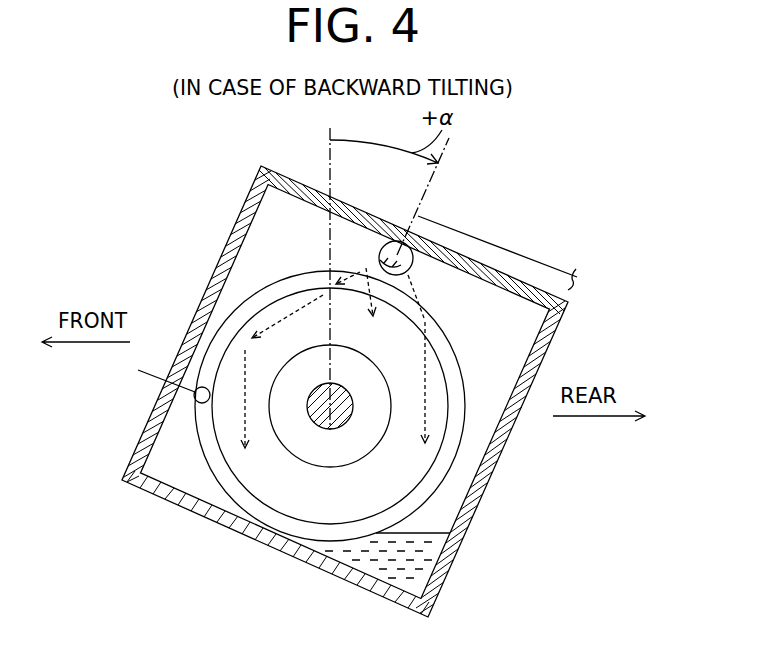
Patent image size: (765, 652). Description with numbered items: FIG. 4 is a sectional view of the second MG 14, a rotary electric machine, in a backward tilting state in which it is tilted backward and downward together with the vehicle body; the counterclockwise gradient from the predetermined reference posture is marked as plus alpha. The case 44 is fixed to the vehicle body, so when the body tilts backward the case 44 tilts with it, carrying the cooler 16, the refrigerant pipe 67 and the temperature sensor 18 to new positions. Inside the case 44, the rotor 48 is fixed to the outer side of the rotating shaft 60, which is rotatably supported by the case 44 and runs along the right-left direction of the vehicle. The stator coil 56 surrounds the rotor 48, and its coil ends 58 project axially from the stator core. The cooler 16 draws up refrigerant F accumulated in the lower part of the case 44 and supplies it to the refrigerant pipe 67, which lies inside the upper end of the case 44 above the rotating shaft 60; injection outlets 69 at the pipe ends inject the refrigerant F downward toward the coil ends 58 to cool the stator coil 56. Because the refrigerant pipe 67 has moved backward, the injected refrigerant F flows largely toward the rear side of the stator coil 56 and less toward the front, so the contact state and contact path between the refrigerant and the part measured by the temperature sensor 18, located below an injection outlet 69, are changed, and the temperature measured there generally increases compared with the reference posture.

The second MG 14 is at (571, 338).
The cooler 16 is at (495, 245).
The temperature sensor 18 is at (197, 404).
The case 44 is at (500, 442).
The rotor 48 is at (367, 437).
The stator coil 56 is at (293, 502).
The coil ends 58 is at (258, 483).
The rotating shaft 60 is at (342, 418).
The refrigerant pipe 67 is at (418, 265).
The injection outlets 69 is at (372, 267).
The refrigerant F is at (433, 560).